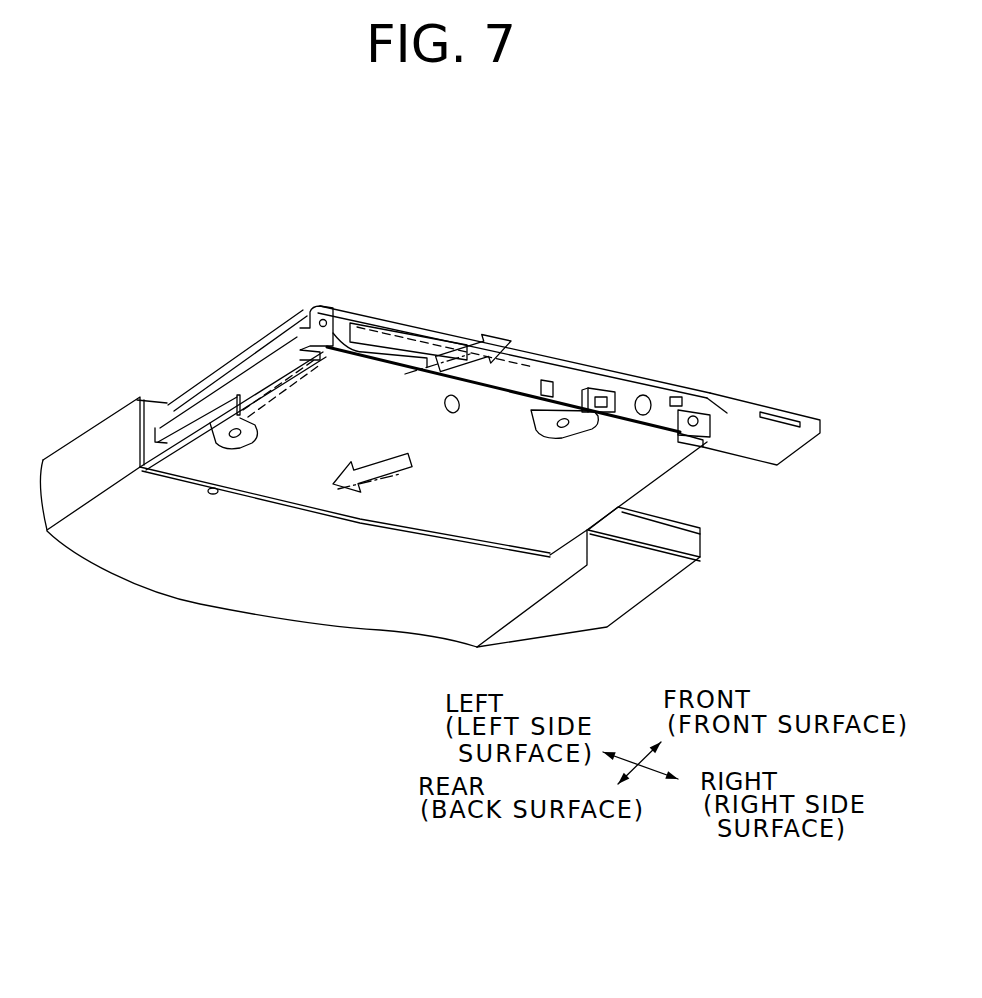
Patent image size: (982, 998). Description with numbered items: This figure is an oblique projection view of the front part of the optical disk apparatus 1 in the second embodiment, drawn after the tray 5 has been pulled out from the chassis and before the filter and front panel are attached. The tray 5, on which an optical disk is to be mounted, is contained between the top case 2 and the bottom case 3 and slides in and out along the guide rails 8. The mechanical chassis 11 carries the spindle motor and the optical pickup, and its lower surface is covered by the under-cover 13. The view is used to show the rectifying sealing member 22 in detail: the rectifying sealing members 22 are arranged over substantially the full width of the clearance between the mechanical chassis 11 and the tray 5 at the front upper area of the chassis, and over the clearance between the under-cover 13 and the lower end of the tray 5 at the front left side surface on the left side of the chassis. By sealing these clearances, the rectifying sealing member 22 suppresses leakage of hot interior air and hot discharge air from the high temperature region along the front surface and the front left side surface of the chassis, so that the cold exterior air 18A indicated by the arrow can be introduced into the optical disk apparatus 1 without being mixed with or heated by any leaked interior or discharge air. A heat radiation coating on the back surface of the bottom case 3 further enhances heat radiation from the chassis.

The optical disk apparatus 1 is at (471, 236).
The top case 2 is at (670, 519).
The bottom case 3 is at (258, 563).
The tray 5 is at (577, 383).
The guide rails 8 is at (160, 440).
The mechanical chassis 11 is at (337, 325).
The under-cover 13 is at (460, 473).
The cold exterior air 18A is at (542, 378).
The rectifying sealing member 22 is at (263, 367).